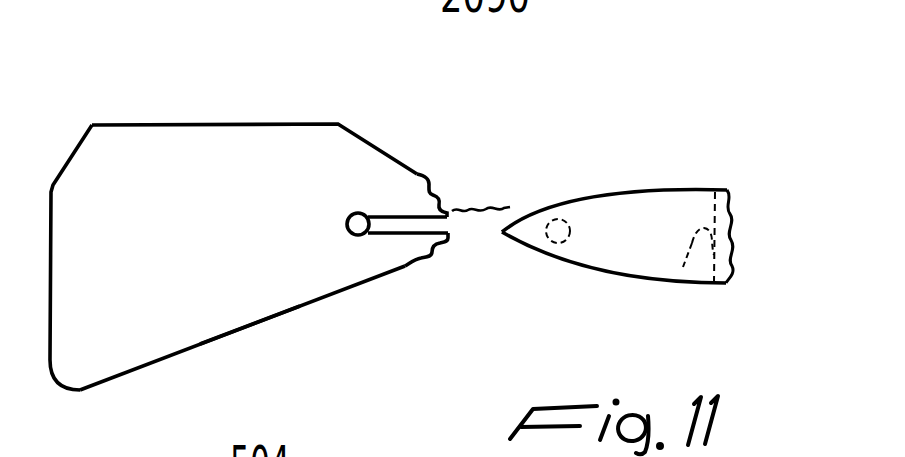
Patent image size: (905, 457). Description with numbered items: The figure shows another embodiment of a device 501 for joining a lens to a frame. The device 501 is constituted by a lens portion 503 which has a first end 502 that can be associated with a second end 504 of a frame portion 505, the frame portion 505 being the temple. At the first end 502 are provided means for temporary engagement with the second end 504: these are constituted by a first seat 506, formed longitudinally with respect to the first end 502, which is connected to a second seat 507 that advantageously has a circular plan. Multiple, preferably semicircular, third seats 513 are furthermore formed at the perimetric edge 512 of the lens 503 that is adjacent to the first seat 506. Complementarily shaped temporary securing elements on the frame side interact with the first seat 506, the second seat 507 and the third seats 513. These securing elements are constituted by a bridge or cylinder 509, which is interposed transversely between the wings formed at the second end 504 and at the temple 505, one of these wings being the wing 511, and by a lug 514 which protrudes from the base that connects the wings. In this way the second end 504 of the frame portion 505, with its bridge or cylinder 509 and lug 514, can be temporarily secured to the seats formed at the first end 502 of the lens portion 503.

The device 501 is at (237, 103).
The first end 502 is at (340, 308).
The lens portion 503 is at (148, 148).
The second end 504 is at (600, 185).
The frame portion 505 is at (736, 240).
The first seat 506 is at (402, 217).
The second seat 507 is at (350, 216).
The bridge or cylinder 509 is at (563, 245).
The wing 511 is at (672, 198).
The perimetric edge 512 is at (247, 330).
The third seats 513 is at (430, 178).
The lug 514 is at (683, 267).